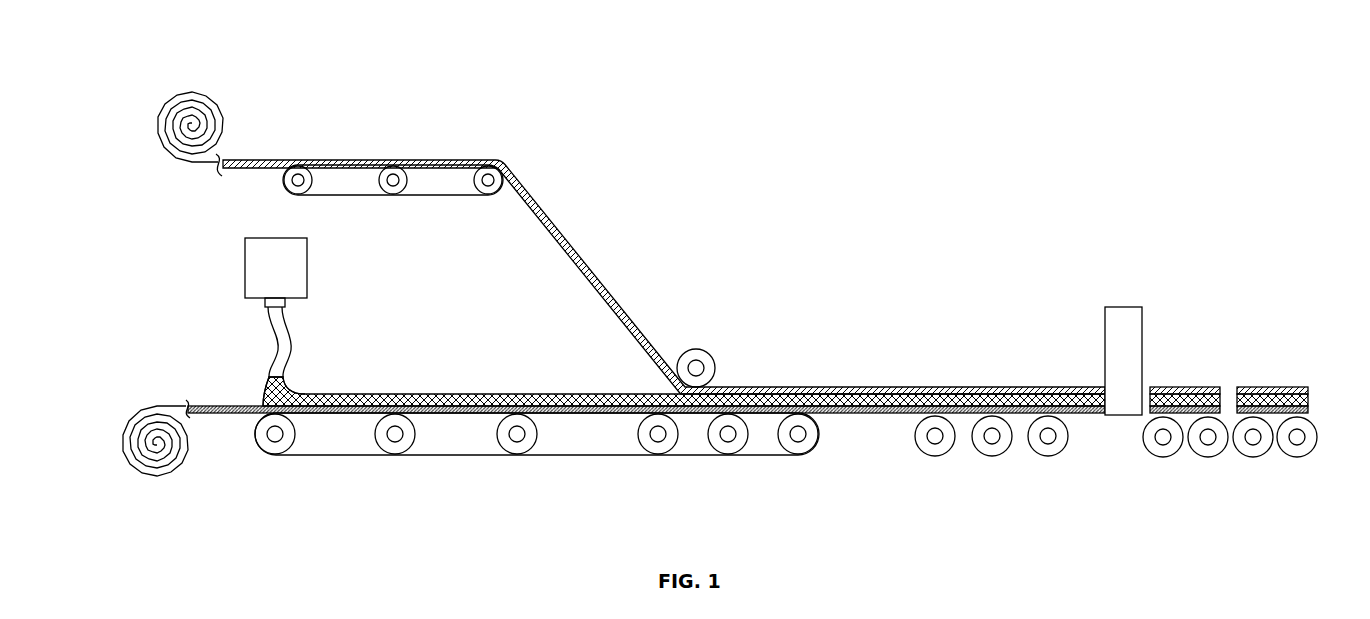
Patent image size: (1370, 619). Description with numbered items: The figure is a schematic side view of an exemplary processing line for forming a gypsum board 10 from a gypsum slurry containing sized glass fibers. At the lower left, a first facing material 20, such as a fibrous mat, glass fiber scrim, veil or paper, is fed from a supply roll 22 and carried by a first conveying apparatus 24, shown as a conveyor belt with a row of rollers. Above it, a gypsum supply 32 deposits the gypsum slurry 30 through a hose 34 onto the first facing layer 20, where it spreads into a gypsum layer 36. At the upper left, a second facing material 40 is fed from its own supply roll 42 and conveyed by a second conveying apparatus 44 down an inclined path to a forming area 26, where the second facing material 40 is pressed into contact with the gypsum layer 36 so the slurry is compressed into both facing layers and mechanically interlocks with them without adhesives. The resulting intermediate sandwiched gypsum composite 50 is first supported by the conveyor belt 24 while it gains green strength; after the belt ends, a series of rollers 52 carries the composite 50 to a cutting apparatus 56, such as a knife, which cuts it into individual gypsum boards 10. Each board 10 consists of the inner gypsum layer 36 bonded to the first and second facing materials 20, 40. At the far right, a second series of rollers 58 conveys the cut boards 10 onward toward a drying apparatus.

The gypsum board 10 is at (1182, 379).
The first facing material 20 is at (228, 415).
The supply roll 22 is at (177, 482).
The first conveying apparatus 24 is at (497, 468).
The forming area 26 is at (673, 341).
The gypsum slurry 30 is at (300, 379).
The gypsum supply 32 is at (245, 263).
The hose 34 is at (287, 330).
The gypsum layer 36 is at (441, 388).
The second facing material 40 is at (318, 159).
The supply roll 42 is at (226, 108).
The second conveying apparatus 44 is at (295, 202).
The intermediate sandwiched gypsum composite 50 is at (740, 330).
The series of rollers 52 is at (993, 473).
The cutting apparatus 56 is at (1122, 306).
The second series of rollers 58 is at (1232, 469).